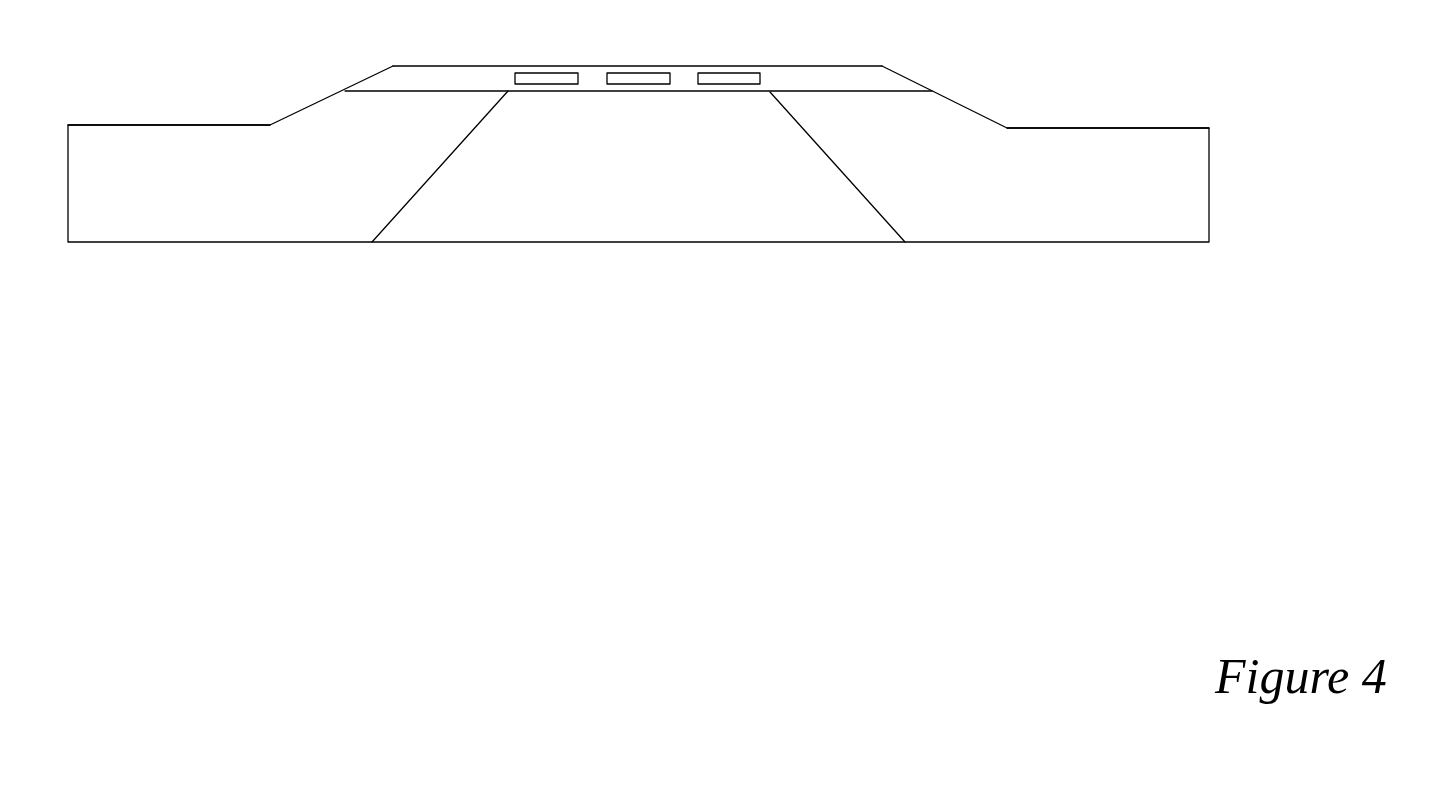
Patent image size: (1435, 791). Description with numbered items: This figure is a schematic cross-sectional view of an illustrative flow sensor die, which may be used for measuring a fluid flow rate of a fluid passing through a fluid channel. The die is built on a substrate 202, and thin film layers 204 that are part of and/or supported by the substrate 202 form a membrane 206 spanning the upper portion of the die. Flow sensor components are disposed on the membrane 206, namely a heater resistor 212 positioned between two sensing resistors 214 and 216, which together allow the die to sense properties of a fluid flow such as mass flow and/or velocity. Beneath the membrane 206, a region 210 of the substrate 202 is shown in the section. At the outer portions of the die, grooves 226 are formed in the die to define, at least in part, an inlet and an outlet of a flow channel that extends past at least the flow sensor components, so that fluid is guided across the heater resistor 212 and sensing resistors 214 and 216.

The substrate 202 is at (1200, 170).
The thin film layers 204 is at (893, 80).
The membrane 206 is at (592, 76).
The channel region 210 is at (737, 208).
The heater resistor 212 is at (628, 84).
The sensing resistor 214 is at (545, 83).
The sensing resistor 216 is at (732, 84).
The grooves 226 is at (168, 125).